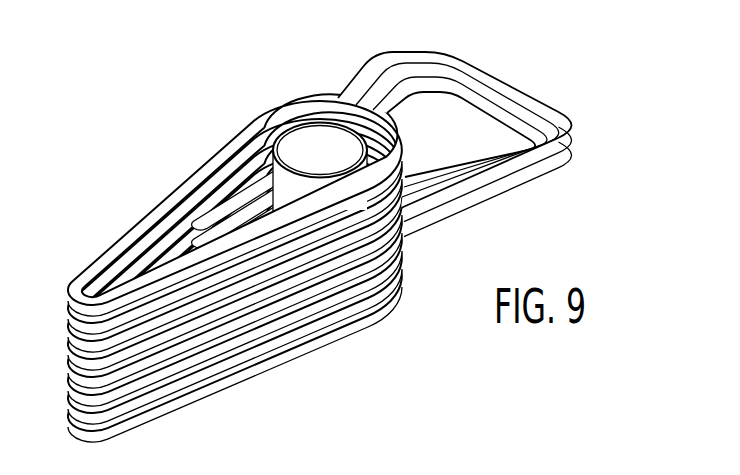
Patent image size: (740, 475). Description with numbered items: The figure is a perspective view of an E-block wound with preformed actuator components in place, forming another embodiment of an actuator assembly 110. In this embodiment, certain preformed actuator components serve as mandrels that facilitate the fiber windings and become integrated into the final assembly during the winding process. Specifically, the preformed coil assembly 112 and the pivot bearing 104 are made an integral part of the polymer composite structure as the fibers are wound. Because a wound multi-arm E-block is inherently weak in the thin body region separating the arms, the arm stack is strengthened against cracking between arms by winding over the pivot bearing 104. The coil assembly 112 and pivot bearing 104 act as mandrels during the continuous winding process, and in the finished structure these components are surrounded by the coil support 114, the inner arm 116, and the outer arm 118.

The pivot bearing 104 is at (320, 143).
The actuator assembly 110 is at (350, 223).
The coil assembly 112 is at (493, 120).
The coil support 114 is at (574, 130).
The inner arm 116 is at (241, 160).
The outer arm 118 is at (227, 236).